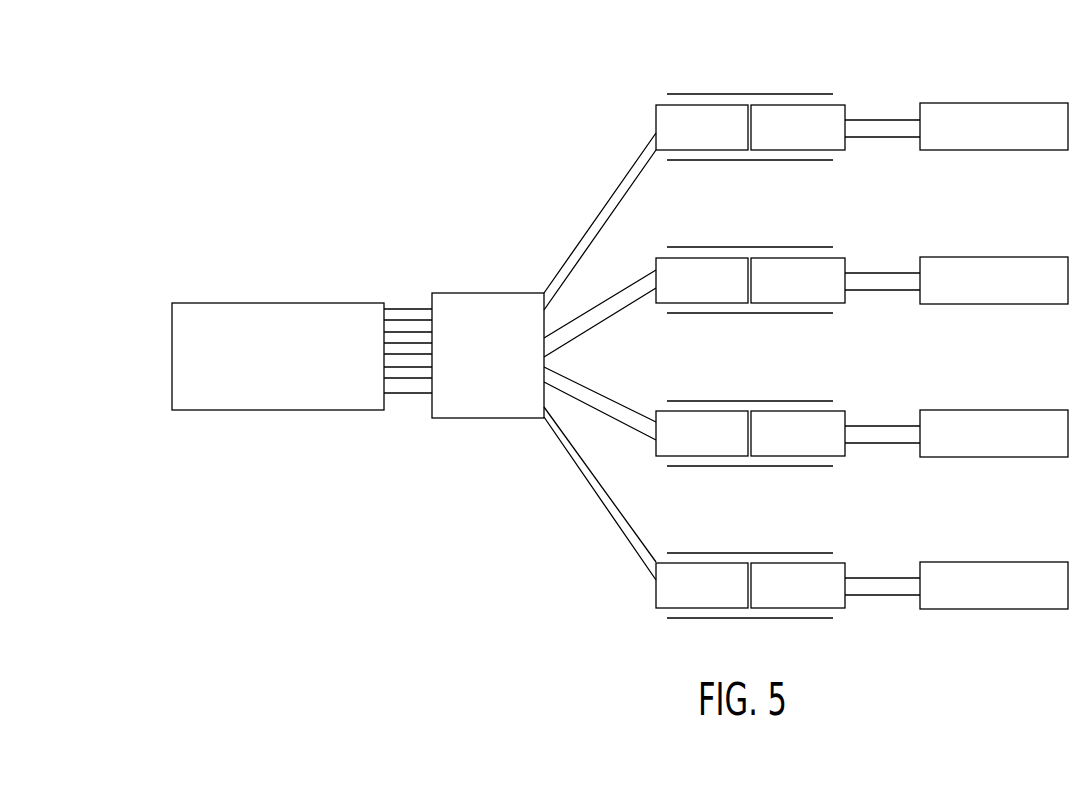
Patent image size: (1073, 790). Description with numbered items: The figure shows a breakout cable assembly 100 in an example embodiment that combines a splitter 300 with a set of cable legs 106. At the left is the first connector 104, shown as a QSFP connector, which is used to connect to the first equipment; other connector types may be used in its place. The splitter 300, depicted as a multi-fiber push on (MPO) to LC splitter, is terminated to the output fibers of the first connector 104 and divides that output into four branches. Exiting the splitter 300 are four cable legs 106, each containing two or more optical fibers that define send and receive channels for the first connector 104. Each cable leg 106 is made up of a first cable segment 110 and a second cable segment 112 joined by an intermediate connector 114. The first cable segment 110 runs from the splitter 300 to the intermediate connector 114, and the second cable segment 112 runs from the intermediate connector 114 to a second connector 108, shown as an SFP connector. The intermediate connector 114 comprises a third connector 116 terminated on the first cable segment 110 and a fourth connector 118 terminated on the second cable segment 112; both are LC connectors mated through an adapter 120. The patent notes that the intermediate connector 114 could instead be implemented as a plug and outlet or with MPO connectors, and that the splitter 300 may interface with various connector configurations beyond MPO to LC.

The breakout cable assembly 100 is at (327, 136).
The first connector 104 is at (262, 302).
The cable legs 106 is at (593, 356).
The second connector 108 is at (1033, 152).
The first cable segment 110 is at (622, 199).
The second cable segment 112 is at (880, 138).
The intermediate connector 114 is at (752, 120).
The third connector 116 is at (718, 144).
The fourth connector 118 is at (837, 146).
The adapter 120 is at (803, 162).
The splitter 300 is at (498, 420).